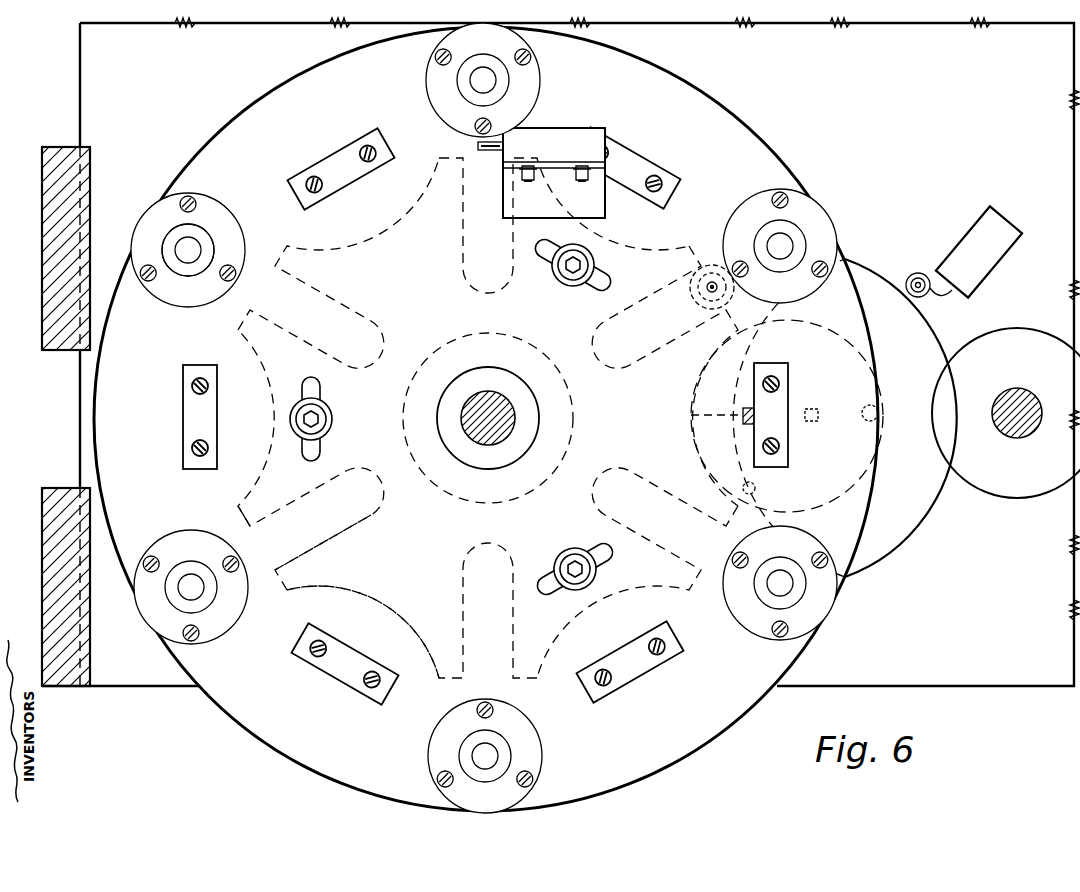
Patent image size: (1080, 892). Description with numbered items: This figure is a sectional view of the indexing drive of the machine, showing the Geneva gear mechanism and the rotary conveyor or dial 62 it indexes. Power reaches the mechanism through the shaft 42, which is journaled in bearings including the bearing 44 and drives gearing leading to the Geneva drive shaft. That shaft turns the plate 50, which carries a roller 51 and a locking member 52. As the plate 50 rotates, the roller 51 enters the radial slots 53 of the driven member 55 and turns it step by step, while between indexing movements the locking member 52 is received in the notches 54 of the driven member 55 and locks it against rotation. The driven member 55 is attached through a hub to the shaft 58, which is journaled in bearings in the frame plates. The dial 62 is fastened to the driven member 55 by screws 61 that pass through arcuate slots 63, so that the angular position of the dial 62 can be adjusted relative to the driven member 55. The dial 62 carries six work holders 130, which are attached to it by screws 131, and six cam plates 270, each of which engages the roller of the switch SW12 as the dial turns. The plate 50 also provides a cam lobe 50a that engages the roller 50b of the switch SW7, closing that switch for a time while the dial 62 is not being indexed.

The cam plate 270 is at (340, 160).
The work holder 130 is at (186, 277).
The screw 131 is at (149, 289).
The shaft 58 is at (501, 404).
The screw 61 is at (320, 416).
The arcuate slot 63 is at (321, 439).
The driven member 55 is at (236, 505).
The radial slot 53 is at (343, 518).
The notch 54 is at (405, 603).
The rotary conveyor or dial 62 is at (234, 722).
The roller 51 is at (710, 278).
The plate 50 is at (932, 510).
The cam lobe 50a is at (840, 244).
The roller of switch SW7 50b is at (918, 273).
The locking member 52 is at (822, 510).
The shaft 42 is at (1032, 398).
The bearing 44 is at (1020, 499).
The switch SW12 is at (600, 128).
The switch SW7 is at (1014, 243).